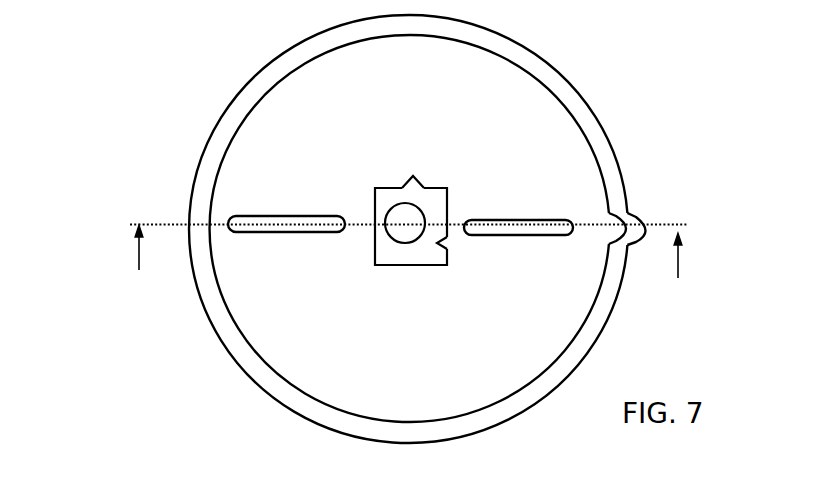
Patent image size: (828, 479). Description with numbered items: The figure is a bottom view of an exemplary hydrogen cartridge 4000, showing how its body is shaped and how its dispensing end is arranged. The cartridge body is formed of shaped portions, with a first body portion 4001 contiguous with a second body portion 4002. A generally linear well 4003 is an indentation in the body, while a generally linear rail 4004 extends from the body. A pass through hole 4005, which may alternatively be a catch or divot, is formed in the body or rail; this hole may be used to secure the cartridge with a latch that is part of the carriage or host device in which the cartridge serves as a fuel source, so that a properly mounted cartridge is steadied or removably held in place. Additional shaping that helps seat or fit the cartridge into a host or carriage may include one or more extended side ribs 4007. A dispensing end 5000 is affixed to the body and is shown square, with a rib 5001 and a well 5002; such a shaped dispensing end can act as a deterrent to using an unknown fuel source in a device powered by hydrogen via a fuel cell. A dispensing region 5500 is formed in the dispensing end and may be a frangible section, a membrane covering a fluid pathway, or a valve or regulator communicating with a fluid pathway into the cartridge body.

The hydrogen cartridge 4000 is at (370, 229).
The first body portion 4001 is at (286, 243).
The second body portion 4002 is at (456, 228).
The generally linear well 4003 is at (545, 235).
The generally linear rail 4004 is at (260, 179).
The pass through hole 4005 is at (189, 179).
The extended side ribs 4007 is at (652, 275).
The dispensing end 5000 is at (418, 229).
The rib 5001 is at (421, 181).
The well 5002 is at (437, 243).
The dispensing region 5500 is at (402, 235).